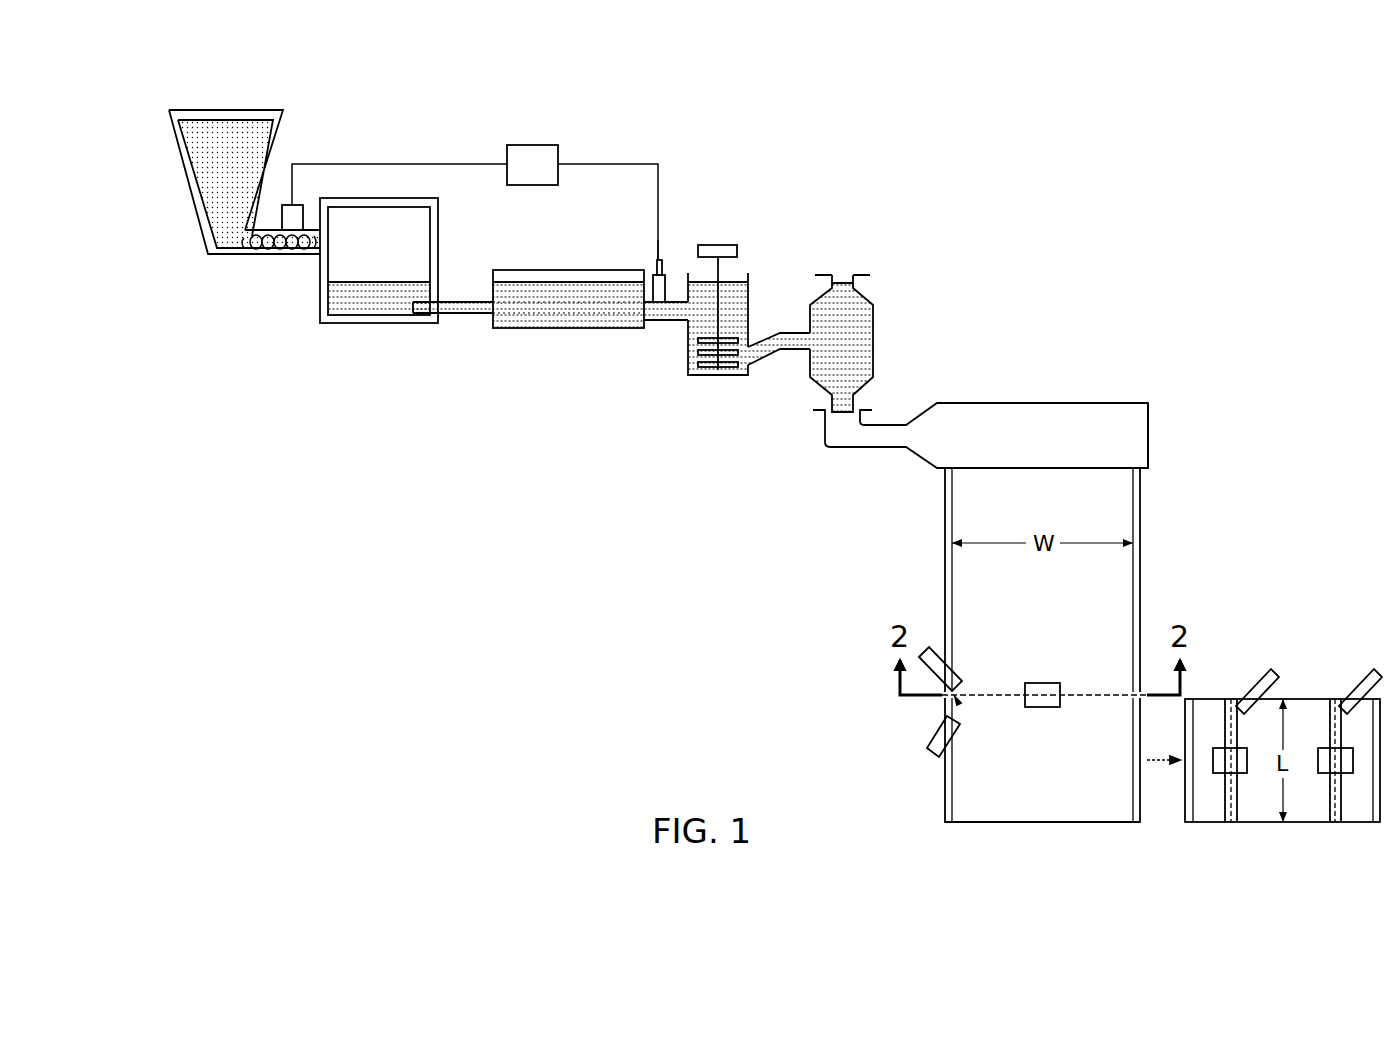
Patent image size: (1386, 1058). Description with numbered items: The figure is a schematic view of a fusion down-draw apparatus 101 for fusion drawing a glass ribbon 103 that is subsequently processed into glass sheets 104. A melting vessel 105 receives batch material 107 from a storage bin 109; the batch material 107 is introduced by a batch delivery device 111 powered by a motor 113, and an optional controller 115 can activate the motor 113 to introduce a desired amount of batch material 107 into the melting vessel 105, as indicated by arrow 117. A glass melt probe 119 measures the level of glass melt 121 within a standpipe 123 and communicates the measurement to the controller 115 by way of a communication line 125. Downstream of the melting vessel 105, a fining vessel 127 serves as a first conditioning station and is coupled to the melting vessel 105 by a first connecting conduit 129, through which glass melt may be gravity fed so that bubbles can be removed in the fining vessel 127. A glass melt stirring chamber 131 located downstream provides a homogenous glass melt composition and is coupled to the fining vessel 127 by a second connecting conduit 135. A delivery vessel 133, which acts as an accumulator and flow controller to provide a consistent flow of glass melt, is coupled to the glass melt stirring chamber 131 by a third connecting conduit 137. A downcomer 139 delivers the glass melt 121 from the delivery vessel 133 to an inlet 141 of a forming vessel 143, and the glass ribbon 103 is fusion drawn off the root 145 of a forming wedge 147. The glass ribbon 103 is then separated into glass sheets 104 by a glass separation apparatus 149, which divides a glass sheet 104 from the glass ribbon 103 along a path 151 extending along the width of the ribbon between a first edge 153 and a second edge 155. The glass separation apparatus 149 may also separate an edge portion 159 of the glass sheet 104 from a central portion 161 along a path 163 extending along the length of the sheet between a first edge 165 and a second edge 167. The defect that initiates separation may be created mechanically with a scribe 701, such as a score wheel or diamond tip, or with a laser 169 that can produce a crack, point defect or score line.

The fusion down-draw apparatus 101 is at (867, 201).
The glass ribbon 103 is at (1023, 477).
The glass sheet 104 is at (943, 783).
The melting vessel 105 is at (358, 346).
The batch material 107 is at (218, 118).
The storage bin 109 is at (187, 183).
The batch delivery device 111 is at (270, 248).
The motor 113 is at (297, 205).
The controller 115 is at (530, 145).
The arrow 117 is at (389, 264).
The glass melt probe 119 is at (657, 262).
The glass melt 121 is at (410, 282).
The standpipe 123 is at (667, 273).
The communication line 125 is at (603, 163).
The fining vessel 127 is at (563, 270).
The first connecting conduit 129 is at (467, 302).
The glass melt stirring chamber 131 is at (750, 298).
The delivery vessel 133 is at (877, 318).
The second connecting conduit 135 is at (668, 327).
The third connecting conduit 137 is at (772, 360).
The downcomer 139 is at (857, 400).
The inlet 141 is at (823, 427).
The forming vessel 143 is at (1105, 402).
The root 145 is at (1055, 464).
The forming wedge 147 is at (1140, 443).
The glass separation apparatus 149 is at (1050, 668).
The path 151 is at (977, 695).
The first edge 153 is at (943, 570).
The second edge 155 is at (1140, 588).
The edge portion 159 is at (1203, 822).
The central portion 161 is at (1320, 705).
The path 163 is at (1227, 715).
The first edge 165 is at (1287, 698).
The second edge 167 is at (1243, 822).
The laser 169 is at (948, 738).
The scribe 701 is at (955, 686).